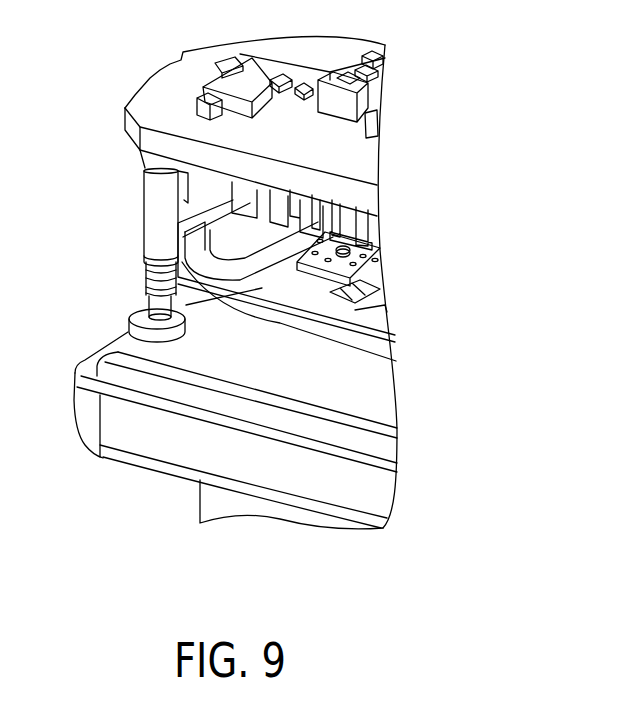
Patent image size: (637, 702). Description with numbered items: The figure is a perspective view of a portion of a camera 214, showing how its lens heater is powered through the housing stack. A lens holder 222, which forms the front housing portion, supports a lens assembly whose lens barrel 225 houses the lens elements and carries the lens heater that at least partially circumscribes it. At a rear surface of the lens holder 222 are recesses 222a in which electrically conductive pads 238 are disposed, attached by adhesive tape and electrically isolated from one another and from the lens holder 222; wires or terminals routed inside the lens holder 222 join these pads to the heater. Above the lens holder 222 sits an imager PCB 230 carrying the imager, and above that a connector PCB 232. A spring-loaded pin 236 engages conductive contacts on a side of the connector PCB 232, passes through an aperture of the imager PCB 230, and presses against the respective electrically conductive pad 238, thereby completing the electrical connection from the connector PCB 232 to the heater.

The camera 214 is at (170, 535).
The lens holder 222 is at (147, 437).
The recess 222a is at (118, 343).
The lens barrel 225 is at (263, 508).
The imager PCB 230 is at (380, 323).
The connector PCB 232 is at (177, 100).
The spring-loaded pin 236 is at (165, 218).
The electrically conductive pad 238 is at (177, 318).